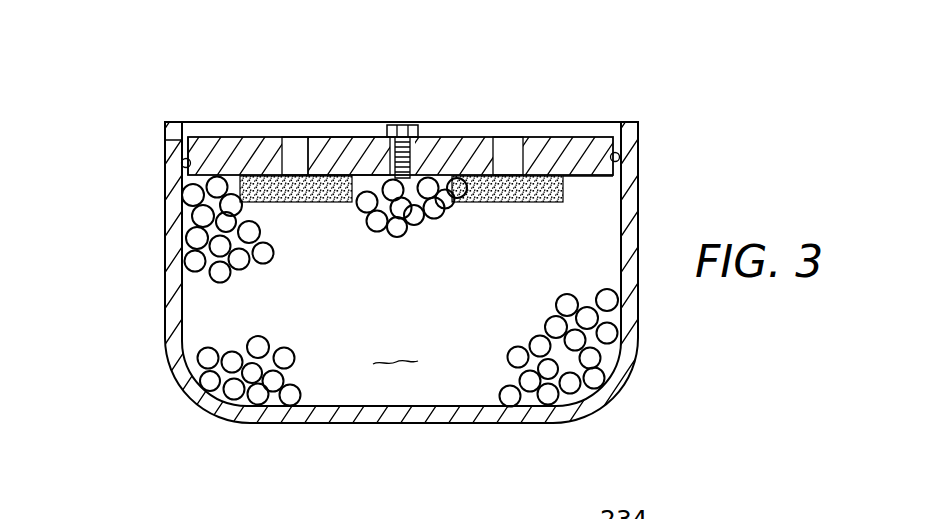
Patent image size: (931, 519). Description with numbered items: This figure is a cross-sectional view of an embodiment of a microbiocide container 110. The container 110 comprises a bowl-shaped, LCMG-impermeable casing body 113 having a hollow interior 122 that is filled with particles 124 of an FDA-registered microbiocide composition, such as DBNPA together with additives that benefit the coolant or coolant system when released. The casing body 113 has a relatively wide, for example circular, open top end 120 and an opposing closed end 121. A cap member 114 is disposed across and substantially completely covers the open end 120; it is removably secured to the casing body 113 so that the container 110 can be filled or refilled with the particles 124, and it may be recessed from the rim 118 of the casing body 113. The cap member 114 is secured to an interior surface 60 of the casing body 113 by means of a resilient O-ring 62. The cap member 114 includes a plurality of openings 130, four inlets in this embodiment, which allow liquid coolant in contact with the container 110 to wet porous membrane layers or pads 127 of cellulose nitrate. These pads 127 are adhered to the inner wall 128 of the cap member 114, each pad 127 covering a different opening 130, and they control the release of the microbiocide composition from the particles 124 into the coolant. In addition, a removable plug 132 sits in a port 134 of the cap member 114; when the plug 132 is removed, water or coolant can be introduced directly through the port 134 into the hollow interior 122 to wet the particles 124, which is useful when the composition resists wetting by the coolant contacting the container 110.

The interior surface 60 is at (166, 133).
The resilient O-ring 62 is at (183, 164).
The container 110 is at (672, 201).
The casing body 113 is at (166, 246).
The cap member 114 is at (568, 137).
The rim 118 is at (168, 123).
The open top end 120 is at (212, 110).
The closed end 121 is at (417, 423).
The hollow interior 122 is at (397, 349).
The particles 124 is at (233, 388).
The membrane layers or pads 127 is at (302, 204).
The inner wall 128 is at (580, 178).
The opening 130 is at (295, 150).
The removable plug 132 is at (405, 128).
The port 134 is at (376, 140).